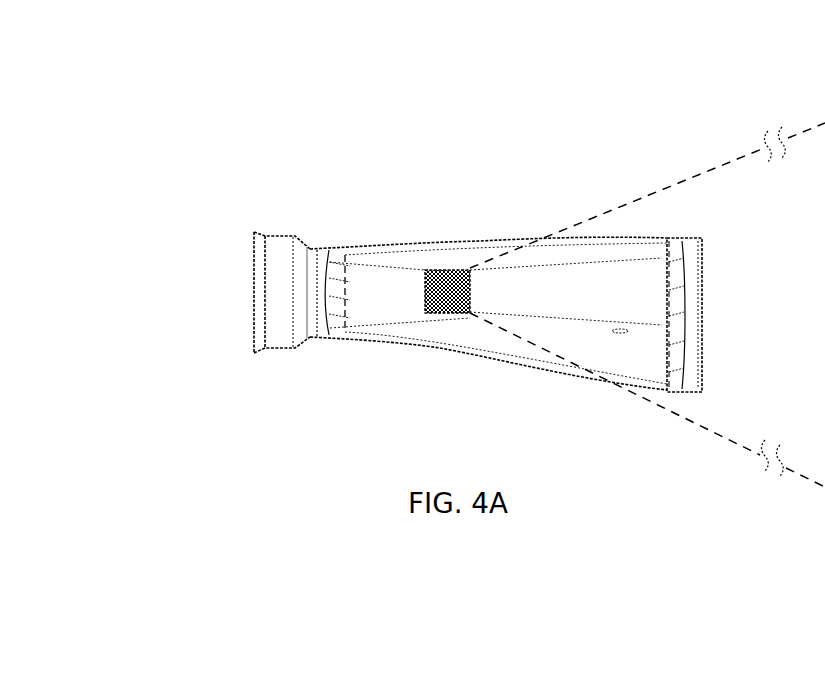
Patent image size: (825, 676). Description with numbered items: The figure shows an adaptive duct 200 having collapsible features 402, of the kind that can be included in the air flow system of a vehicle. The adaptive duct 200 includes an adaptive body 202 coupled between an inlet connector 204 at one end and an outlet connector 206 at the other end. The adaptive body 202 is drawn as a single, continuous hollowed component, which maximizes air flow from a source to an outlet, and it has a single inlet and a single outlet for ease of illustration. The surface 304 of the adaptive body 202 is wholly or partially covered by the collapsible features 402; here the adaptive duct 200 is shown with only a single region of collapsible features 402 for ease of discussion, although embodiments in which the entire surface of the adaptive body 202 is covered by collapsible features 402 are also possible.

The adaptive duct 200 is at (264, 124).
The adaptive body 202 is at (380, 293).
The inlet connector 204 is at (275, 278).
The outlet connector 206 is at (692, 370).
The surface 304 is at (621, 328).
The collapsible features 402 is at (441, 270).